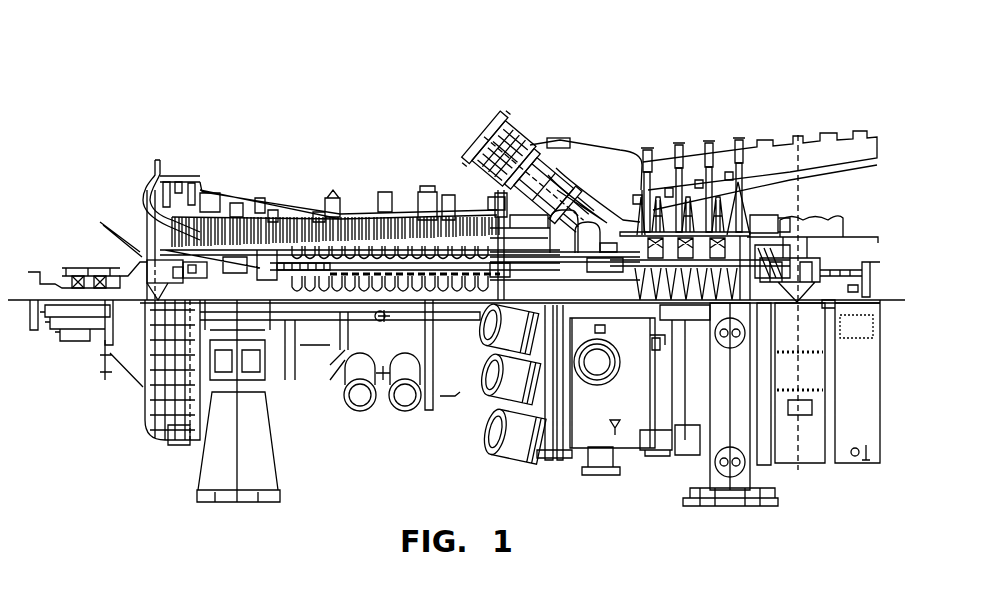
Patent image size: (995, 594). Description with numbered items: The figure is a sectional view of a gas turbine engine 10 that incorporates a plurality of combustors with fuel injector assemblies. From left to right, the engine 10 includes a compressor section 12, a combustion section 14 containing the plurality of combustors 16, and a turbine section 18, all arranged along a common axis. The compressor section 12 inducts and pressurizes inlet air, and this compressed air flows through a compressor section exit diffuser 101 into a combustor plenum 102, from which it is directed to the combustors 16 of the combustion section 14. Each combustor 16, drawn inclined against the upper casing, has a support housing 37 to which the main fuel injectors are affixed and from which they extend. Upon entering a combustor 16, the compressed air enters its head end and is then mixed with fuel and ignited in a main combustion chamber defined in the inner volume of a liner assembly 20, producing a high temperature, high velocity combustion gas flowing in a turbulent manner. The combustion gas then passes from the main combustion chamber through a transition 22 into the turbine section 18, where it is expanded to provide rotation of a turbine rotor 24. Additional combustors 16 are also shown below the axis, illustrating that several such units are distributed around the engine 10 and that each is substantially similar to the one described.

The gas turbine engine 10 is at (289, 56).
The compressor section 12 is at (130, 150).
The combustion section 14 is at (600, 118).
The combustors 16 is at (483, 137).
The turbine section 18 is at (622, 120).
The liner assembly 20 is at (565, 166).
The transition 22 is at (577, 192).
The turbine rotor 24 is at (806, 282).
The support housing 37 is at (484, 136).
The compressor section exit diffuser 101 is at (492, 205).
The combustor plenum 102 is at (590, 175).